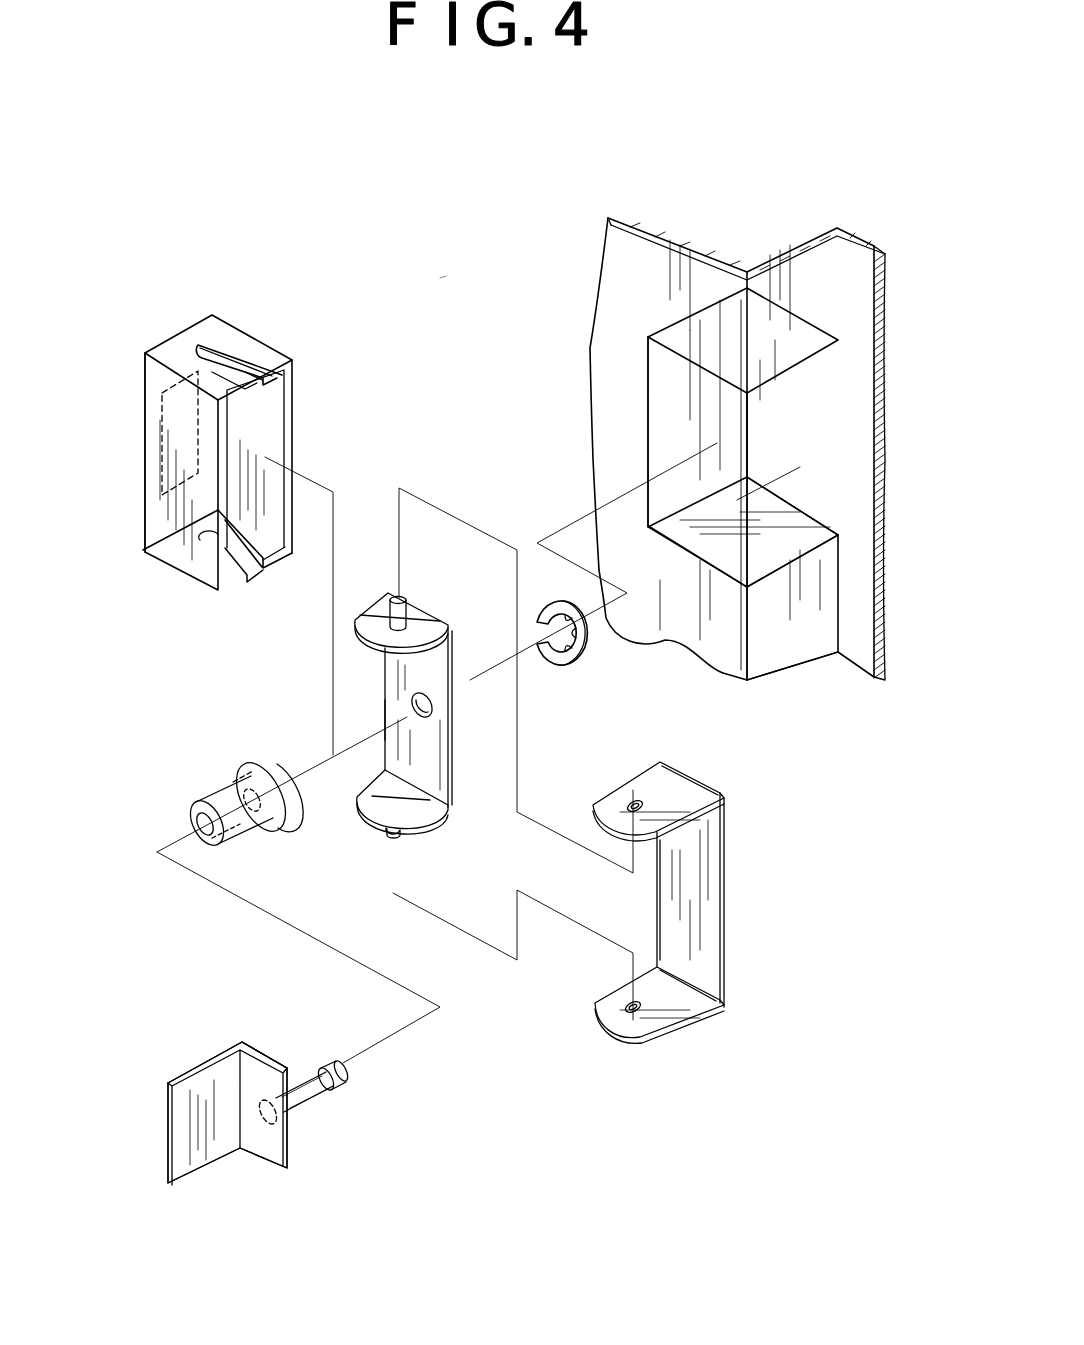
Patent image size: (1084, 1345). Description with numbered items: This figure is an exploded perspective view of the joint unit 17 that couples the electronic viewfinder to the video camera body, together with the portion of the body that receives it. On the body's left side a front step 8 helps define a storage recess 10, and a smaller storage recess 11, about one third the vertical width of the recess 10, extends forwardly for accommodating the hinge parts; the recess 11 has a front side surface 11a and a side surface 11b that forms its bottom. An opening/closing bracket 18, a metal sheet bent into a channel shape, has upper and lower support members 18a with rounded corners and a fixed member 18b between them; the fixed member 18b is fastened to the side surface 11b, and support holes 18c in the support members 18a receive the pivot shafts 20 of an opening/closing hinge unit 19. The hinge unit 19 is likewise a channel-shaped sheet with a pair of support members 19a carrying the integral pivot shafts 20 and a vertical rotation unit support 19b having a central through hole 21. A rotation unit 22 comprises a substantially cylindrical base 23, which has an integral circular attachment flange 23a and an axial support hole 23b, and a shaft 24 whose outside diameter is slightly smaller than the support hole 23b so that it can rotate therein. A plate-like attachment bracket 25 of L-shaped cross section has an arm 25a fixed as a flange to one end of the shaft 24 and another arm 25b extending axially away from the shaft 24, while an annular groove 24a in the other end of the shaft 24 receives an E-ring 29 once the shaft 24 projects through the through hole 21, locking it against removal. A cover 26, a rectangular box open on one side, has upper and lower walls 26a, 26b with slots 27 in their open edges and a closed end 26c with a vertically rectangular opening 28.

The front step 8 is at (781, 660).
The storage recess 10 is at (862, 650).
The storage recess 11 is at (795, 378).
The front side surface 11a is at (648, 405).
The side surface 11b is at (832, 508).
The joint unit 17 is at (445, 276).
The opening/closing bracket 18 is at (724, 908).
The support members 18a is at (680, 760).
The fixed member 18b is at (700, 960).
The support holes 18c is at (632, 803).
The opening/closing hinge unit 19 is at (438, 612).
The support members 19a is at (420, 656).
The rotation unit support 19b is at (432, 775).
The pivot shafts 20 is at (406, 597).
The through hole 21 is at (432, 712).
The rotation unit 22 is at (250, 992).
The base 23 is at (208, 790).
The attachment flange 23a is at (258, 765).
The support hole 23b is at (240, 832).
The shaft 24 is at (312, 1100).
The annular groove 24a is at (342, 1085).
The attachment bracket 25 is at (292, 1152).
The arm 25a is at (260, 1062).
The arm 25b is at (206, 1165).
The cover 26 is at (279, 347).
The upper wall 26a is at (245, 340).
The lower wall 26b is at (275, 562).
The closed end 26c is at (140, 413).
The slots 27 is at (252, 385).
The opening 28 is at (168, 436).
The E-ring 29 is at (585, 660).